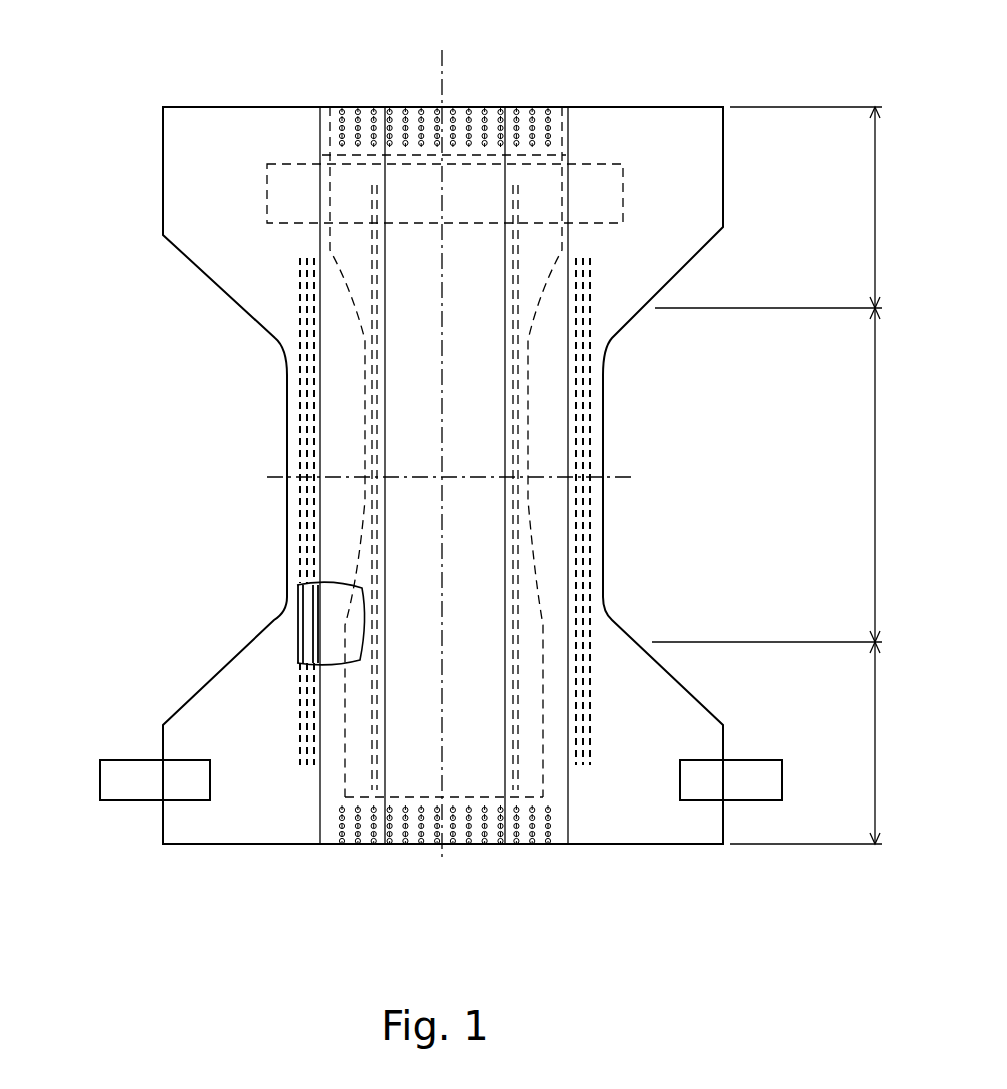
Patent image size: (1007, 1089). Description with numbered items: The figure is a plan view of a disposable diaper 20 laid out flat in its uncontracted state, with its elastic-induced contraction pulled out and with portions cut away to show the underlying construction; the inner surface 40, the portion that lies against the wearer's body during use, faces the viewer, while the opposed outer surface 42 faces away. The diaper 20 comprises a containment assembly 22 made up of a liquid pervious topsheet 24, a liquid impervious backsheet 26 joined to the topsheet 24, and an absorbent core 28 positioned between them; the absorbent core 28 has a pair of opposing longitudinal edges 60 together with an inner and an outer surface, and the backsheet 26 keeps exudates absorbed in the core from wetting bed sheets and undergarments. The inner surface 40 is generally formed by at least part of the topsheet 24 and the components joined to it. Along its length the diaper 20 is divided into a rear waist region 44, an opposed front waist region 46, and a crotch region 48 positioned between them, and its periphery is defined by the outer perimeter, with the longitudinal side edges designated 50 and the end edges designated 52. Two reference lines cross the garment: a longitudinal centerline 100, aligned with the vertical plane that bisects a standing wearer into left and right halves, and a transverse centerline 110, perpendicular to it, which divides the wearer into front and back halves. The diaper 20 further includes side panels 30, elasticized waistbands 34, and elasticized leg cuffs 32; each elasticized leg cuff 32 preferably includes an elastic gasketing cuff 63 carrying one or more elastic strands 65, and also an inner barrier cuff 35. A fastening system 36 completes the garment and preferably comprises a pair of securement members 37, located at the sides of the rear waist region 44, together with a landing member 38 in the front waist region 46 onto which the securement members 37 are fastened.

The diaper 20 is at (127, 104).
The containment assembly 22 is at (400, 313).
The liquid pervious topsheet 24 is at (480, 362).
The liquid impervious backsheet 26 is at (272, 645).
The absorbent core 28 is at (313, 590).
The side panels 30 is at (232, 135).
The elasticized leg cuff 32 is at (553, 658).
The elasticized waistband 34 is at (540, 107).
The inner barrier cuff 35 is at (385, 750).
The fastening system 36 is at (107, 820).
The securement member 37 is at (135, 795).
The landing member 38 is at (623, 172).
The inner surface 40 is at (480, 455).
The outer surface 42 is at (287, 440).
The rear waist region 44 is at (872, 712).
The front waist region 46 is at (872, 200).
The crotch region 48 is at (872, 497).
The side edges 50 is at (287, 373).
The end edges 52 is at (365, 107).
The longitudinal edges 60 is at (347, 638).
The elastic gasketing cuff 63 is at (590, 545).
The elastic strands 65 is at (355, 613).
The longitudinal centerline 100 is at (445, 80).
The transverse centerline 110 is at (632, 477).